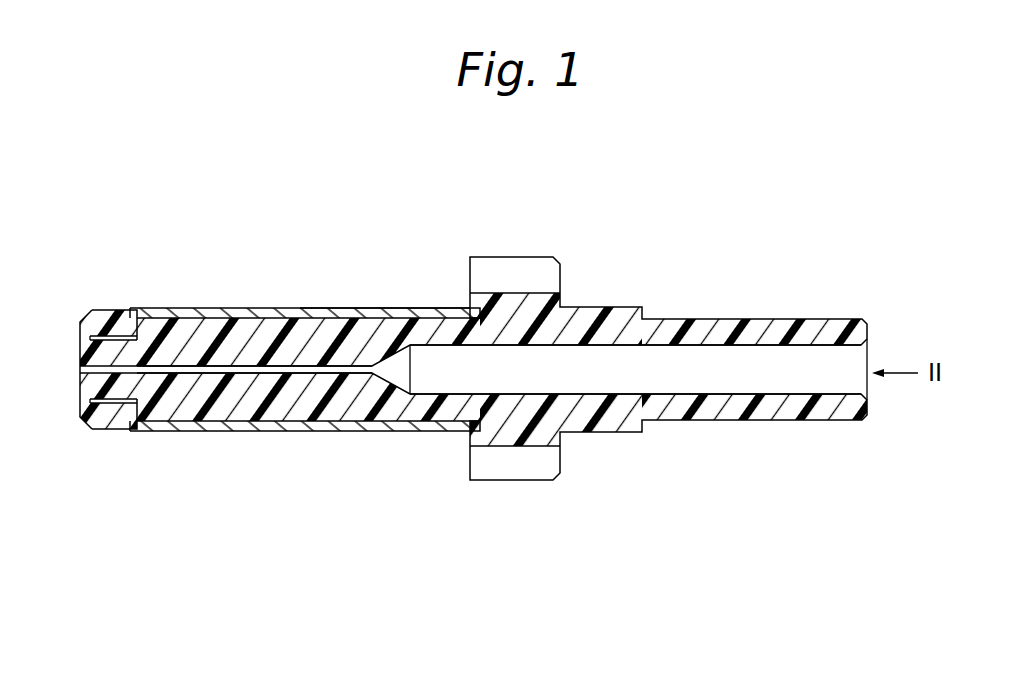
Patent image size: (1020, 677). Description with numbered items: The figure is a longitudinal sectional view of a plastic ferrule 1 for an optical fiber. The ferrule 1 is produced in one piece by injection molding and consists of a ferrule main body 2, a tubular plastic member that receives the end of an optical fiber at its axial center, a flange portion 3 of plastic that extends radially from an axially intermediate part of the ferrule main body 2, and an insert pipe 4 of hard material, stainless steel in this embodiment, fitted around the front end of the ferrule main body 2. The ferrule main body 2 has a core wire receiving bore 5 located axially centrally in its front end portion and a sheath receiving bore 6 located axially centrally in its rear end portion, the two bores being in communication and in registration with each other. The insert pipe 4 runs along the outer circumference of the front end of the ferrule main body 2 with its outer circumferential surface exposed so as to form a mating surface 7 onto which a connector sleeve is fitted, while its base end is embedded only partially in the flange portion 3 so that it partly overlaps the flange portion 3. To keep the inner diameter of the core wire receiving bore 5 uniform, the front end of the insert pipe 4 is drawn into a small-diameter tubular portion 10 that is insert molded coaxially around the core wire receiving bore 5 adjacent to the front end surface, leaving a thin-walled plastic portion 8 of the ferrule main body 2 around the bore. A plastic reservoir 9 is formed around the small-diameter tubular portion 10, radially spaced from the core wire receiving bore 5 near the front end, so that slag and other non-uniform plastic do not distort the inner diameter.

The ferrule 1 is at (473, 371).
The ferrule main body 2 is at (712, 424).
The flange portion 3 is at (500, 438).
The insert pipe 4 is at (252, 302).
The core wire receiving bore 5 is at (322, 366).
The sheath receiving bore 6 is at (734, 350).
The mating surface 7 is at (345, 307).
The thin-walled plastic portion 8 is at (104, 425).
The plastic reservoir 9 is at (98, 322).
The small-diameter tubular portion 10 is at (118, 430).